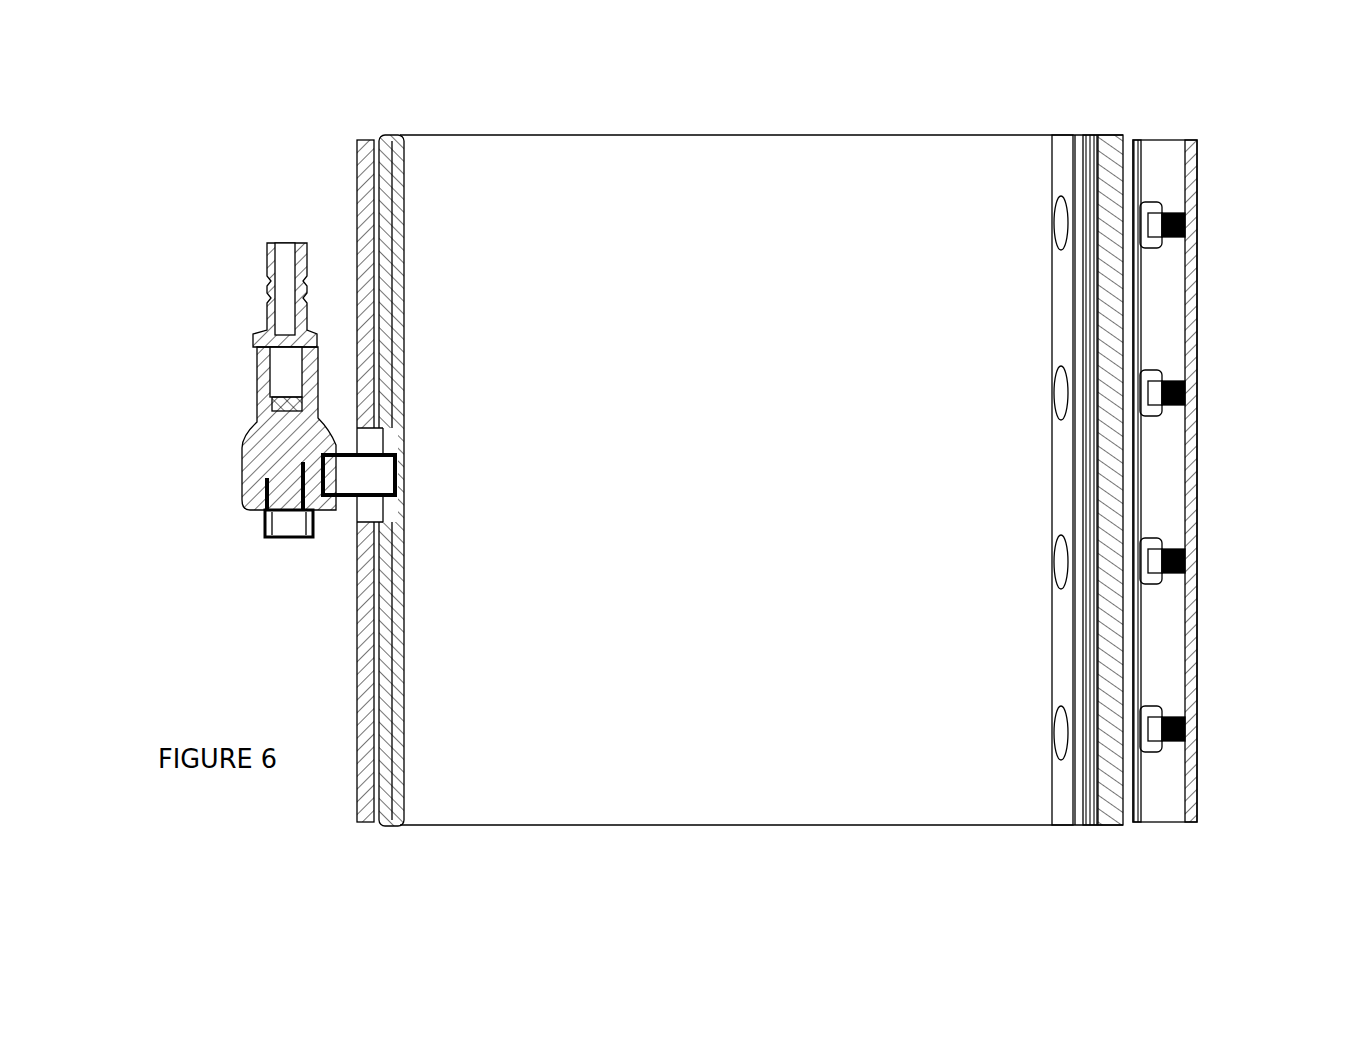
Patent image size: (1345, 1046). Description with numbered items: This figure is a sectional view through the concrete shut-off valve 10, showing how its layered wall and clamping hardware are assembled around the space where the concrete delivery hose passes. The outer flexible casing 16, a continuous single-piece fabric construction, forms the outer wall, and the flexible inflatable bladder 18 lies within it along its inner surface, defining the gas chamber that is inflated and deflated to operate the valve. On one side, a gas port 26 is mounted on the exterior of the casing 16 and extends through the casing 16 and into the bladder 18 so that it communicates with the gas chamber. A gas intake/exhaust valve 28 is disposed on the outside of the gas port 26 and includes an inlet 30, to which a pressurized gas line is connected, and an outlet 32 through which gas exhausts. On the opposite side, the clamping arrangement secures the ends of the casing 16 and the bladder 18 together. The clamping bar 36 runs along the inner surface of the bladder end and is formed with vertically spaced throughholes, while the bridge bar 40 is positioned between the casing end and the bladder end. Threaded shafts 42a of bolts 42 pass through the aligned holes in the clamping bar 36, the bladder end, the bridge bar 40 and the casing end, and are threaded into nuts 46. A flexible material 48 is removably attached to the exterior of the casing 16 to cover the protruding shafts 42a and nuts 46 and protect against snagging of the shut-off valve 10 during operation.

The concrete shut-off valve 10 is at (748, 124).
The outer flexible casing 16 is at (358, 141).
The flexible inflatable bladder 18 is at (387, 136).
The gas port 26 is at (352, 502).
The gas intake/exhaust valve 28 is at (258, 432).
The inlet 30 is at (270, 252).
The outlet 32 is at (266, 514).
The clamping bar 36 is at (1060, 160).
The bridge bar 40 is at (1110, 148).
The bolts 42 is at (1055, 232).
The threaded shafts 42a is at (1180, 230).
The nuts 46 is at (1155, 207).
The flexible material 48 is at (1196, 312).